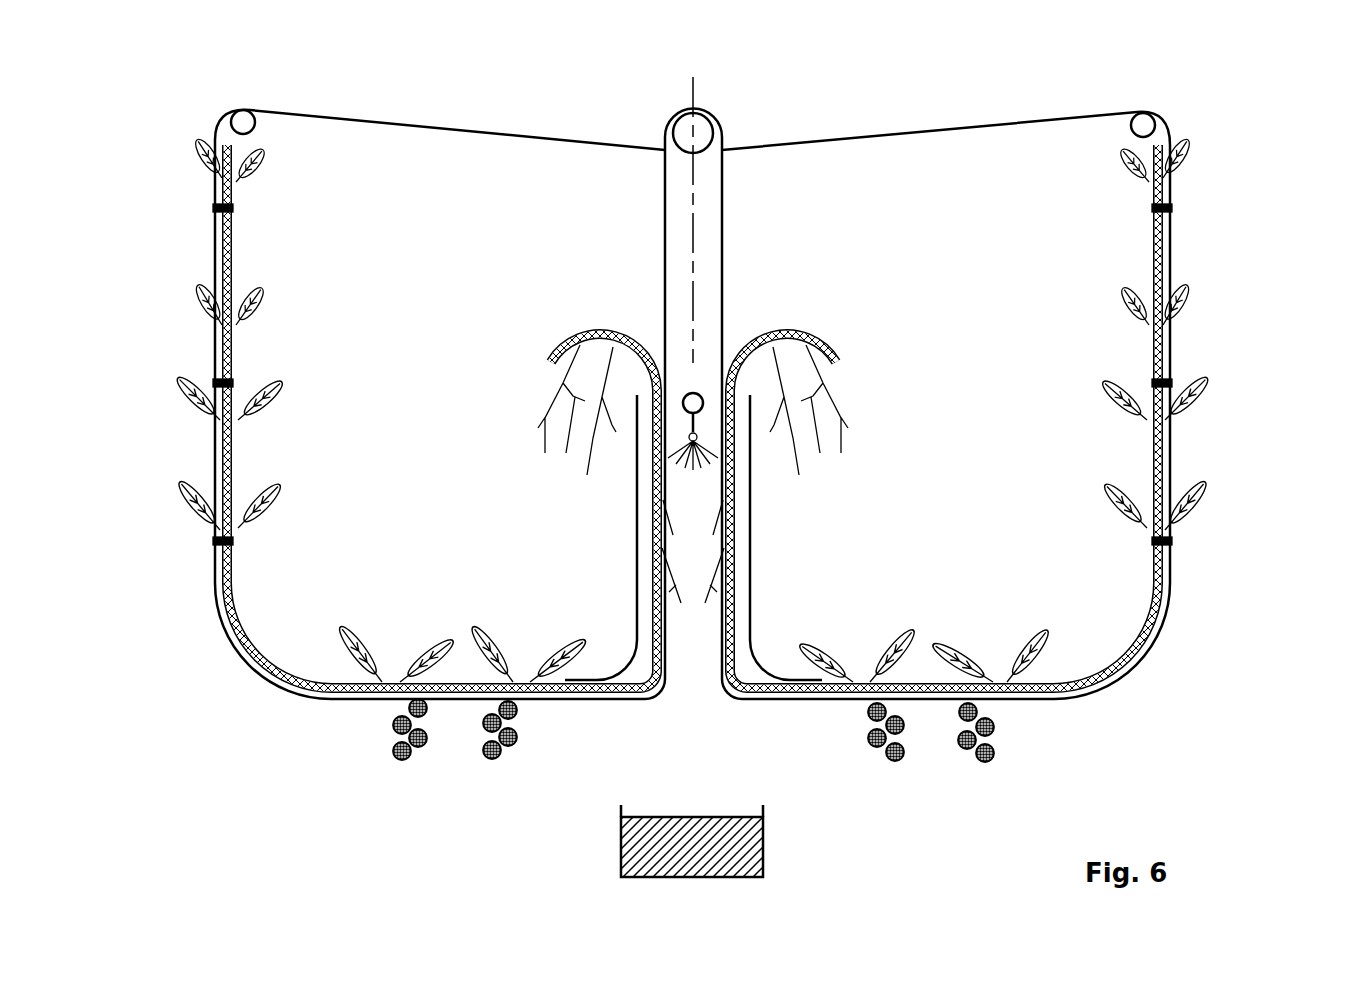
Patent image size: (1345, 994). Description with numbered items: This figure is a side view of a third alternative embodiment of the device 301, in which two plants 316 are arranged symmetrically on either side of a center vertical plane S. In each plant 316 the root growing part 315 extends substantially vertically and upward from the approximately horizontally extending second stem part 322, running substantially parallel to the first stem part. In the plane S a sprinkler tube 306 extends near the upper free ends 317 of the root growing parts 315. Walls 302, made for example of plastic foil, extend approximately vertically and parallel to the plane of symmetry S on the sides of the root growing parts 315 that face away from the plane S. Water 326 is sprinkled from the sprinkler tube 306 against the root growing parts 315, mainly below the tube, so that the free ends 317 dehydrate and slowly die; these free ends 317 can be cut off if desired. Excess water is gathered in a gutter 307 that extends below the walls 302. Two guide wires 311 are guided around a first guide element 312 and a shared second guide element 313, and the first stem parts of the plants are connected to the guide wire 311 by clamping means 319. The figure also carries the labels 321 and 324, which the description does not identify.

The device 301 is at (774, 404).
The walls 302 is at (750, 532).
The sprinkler tube 306 is at (697, 395).
The gutter 307 is at (763, 847).
The guide wires 311 is at (925, 131).
The first guide element 312 is at (1128, 110).
The second guide element 313 is at (703, 133).
The root growing part 315 is at (640, 532).
The plant 316 is at (1145, 660).
The upper free ends 317 is at (825, 343).
The clamping means 319 is at (1172, 541).
The plant support 321 is at (220, 132).
The second stem part 322 is at (448, 700).
The fruit cluster 324 is at (492, 700).
The water 326 is at (672, 457).
The center vertical plane S is at (693, 77).